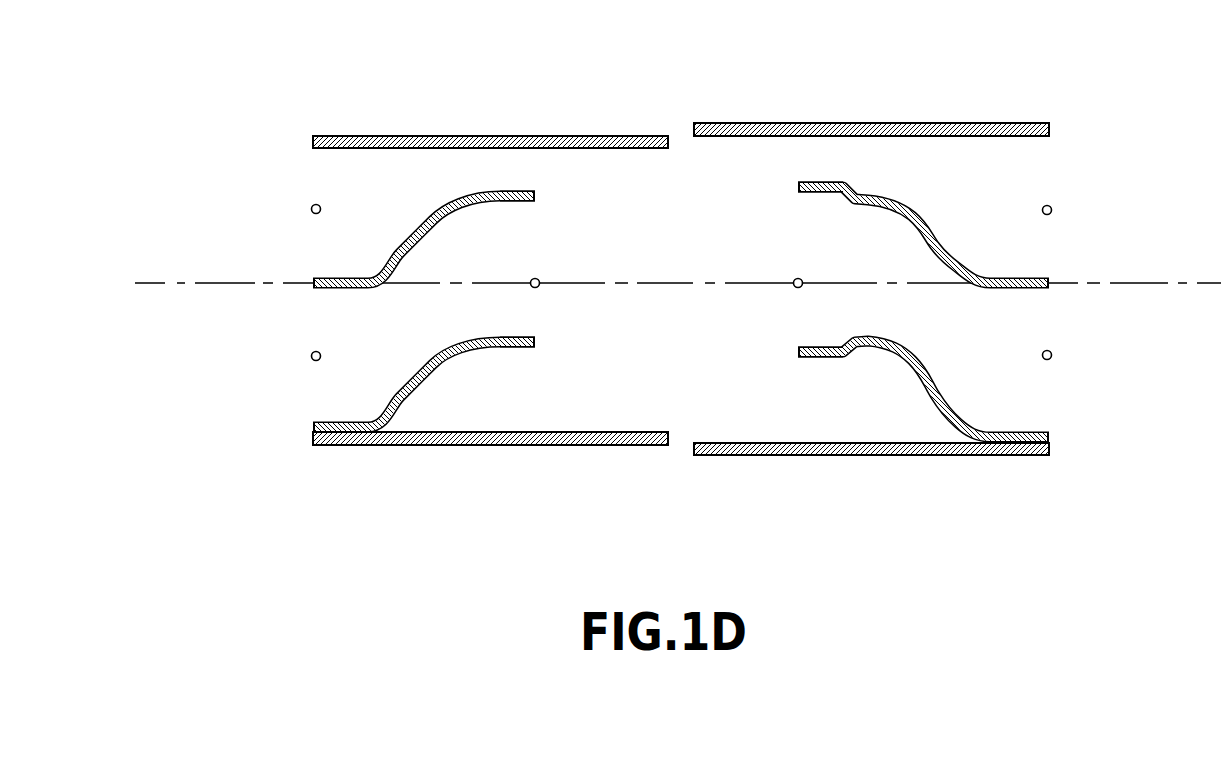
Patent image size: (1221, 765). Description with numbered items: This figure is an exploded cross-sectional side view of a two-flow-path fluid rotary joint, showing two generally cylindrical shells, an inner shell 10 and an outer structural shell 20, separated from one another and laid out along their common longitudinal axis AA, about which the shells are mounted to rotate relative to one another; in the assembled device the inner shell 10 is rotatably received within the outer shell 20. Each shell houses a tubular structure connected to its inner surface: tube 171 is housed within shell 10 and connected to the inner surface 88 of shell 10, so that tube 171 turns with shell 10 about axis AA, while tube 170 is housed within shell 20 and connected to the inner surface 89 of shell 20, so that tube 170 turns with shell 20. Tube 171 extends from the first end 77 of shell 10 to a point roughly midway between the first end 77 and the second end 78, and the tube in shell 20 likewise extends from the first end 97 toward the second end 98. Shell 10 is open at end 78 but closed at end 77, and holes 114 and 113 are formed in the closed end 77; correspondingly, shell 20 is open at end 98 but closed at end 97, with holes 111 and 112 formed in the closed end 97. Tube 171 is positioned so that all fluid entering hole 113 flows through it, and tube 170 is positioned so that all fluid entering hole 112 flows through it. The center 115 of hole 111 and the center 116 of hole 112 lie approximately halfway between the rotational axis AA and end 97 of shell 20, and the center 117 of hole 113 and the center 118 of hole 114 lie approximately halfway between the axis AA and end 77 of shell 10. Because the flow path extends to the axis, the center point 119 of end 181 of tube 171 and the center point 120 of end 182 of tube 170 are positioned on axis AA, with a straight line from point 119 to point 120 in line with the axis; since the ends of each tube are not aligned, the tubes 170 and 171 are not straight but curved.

The inner shell 10 is at (432, 135).
The outer structural shell 20 is at (902, 123).
The first end of shell 10 77 is at (300, 115).
The second end of shell 10 78 is at (665, 135).
The inner surface of shell 10 88 is at (478, 423).
The inner surface of shell 20 89 is at (742, 434).
The first end of shell 20 97 is at (1030, 123).
The second end of shell 20 98 is at (727, 123).
The hole 111 is at (1043, 176).
The hole 112 is at (1063, 407).
The hole 113 is at (313, 389).
The hole 114 is at (285, 182).
The center of hole 111 115 is at (1052, 209).
The center of hole 112 116 is at (1052, 355).
The center of hole 113 117 is at (311, 356).
The center of hole 114 118 is at (312, 213).
The center point of end 181 119 is at (540, 277).
The center point of end 182 120 is at (797, 278).
The tubular structure 170 is at (965, 245).
The tubular structure 171 is at (420, 230).
The end of tube 171 181 is at (536, 191).
The end of tube 170 182 is at (812, 182).
The longitudinal axis AA is at (180, 285).